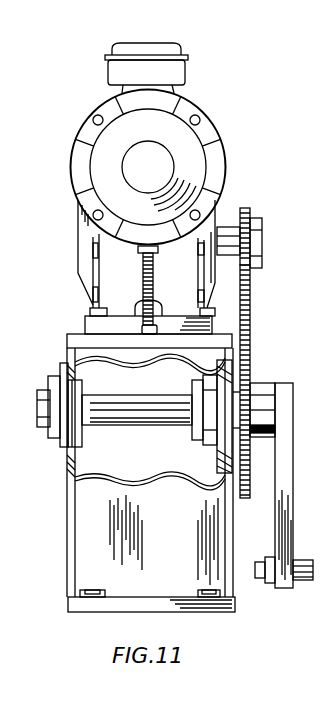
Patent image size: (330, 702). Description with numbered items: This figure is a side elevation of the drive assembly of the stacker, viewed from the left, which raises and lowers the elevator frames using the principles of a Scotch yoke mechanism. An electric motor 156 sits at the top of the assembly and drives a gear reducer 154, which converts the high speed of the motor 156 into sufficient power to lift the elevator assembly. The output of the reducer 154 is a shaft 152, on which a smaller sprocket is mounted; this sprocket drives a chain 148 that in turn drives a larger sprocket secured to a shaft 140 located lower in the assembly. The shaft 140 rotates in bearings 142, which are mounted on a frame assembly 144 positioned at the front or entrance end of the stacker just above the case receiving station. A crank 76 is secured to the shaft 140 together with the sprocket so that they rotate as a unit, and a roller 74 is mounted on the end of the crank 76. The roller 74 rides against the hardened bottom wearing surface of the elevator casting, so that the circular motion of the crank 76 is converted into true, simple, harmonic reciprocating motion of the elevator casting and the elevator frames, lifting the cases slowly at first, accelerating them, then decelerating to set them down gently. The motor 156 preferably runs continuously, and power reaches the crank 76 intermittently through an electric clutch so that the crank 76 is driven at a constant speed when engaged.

The electric motor 156 is at (228, 177).
The gear reducer 154 is at (85, 273).
The shaft 152 is at (225, 228).
The chain 148 is at (250, 373).
The frame assembly 144 is at (70, 498).
The bearings 142 is at (52, 407).
The shaft 140 is at (127, 418).
The crank 76 is at (285, 494).
The roller 74 is at (305, 585).